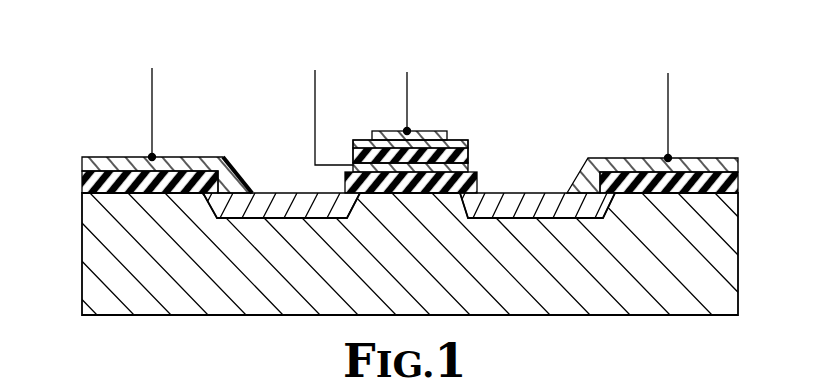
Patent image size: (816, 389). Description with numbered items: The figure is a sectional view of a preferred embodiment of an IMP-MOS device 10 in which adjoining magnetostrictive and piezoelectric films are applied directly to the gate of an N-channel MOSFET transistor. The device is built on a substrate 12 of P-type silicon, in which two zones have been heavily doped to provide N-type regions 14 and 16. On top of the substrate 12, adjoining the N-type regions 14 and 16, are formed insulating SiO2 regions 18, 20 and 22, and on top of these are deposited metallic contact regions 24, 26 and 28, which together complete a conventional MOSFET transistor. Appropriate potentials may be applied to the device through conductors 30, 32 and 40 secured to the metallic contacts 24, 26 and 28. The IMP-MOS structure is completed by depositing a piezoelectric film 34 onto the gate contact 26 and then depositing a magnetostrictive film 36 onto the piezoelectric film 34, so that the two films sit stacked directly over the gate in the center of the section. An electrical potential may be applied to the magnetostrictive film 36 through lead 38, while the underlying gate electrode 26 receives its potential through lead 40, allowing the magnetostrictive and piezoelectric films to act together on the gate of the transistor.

The IMP-MOS device 10 is at (263, 93).
The substrate 12 is at (213, 306).
The N-type region 14 is at (271, 200).
The N-type region 16 is at (515, 203).
The insulating SiO2 region 18 is at (82, 185).
The insulating SiO2 region 20 is at (477, 184).
The insulating SiO2 region 22 is at (728, 187).
The metallic contact region 24 is at (101, 157).
The gate contact 26 is at (356, 164).
The metallic contact region 28 is at (718, 160).
The conductor 30 is at (148, 92).
The conductor 32 is at (672, 90).
The piezoelectric film 34 is at (470, 140).
The magnetostrictive film 36 is at (438, 130).
The lead 38 is at (405, 91).
The lead 40 is at (315, 82).